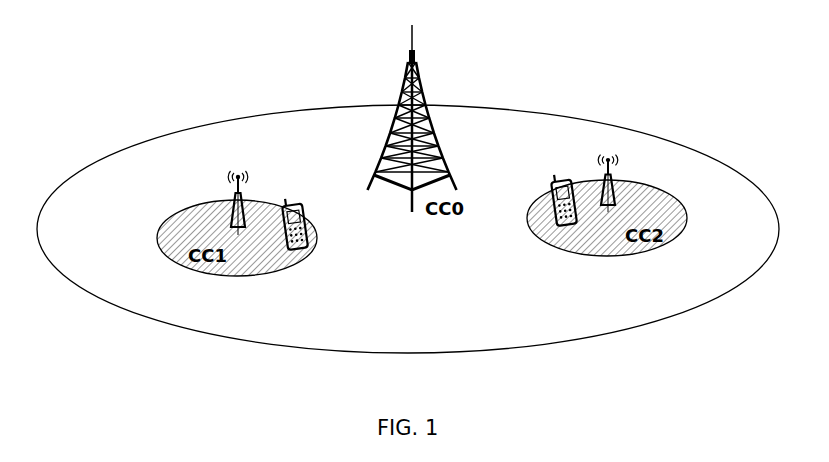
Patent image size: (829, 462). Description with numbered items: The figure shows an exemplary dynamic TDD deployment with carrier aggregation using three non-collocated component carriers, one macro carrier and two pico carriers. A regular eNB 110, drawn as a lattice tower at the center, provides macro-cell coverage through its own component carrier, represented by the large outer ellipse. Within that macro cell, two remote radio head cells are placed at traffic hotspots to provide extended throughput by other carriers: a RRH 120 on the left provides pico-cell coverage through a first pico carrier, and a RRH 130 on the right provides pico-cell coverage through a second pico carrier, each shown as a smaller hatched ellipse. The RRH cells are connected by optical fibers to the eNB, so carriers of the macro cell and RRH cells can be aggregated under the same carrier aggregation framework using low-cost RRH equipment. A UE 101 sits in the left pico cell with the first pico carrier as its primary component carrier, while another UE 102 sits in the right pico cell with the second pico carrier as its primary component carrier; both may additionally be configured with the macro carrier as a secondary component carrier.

The regular eNB 110 is at (414, 118).
The remote radio head 120 is at (219, 203).
The remote radio head 130 is at (625, 184).
The UE 101 is at (304, 218).
The UE 102 is at (558, 191).